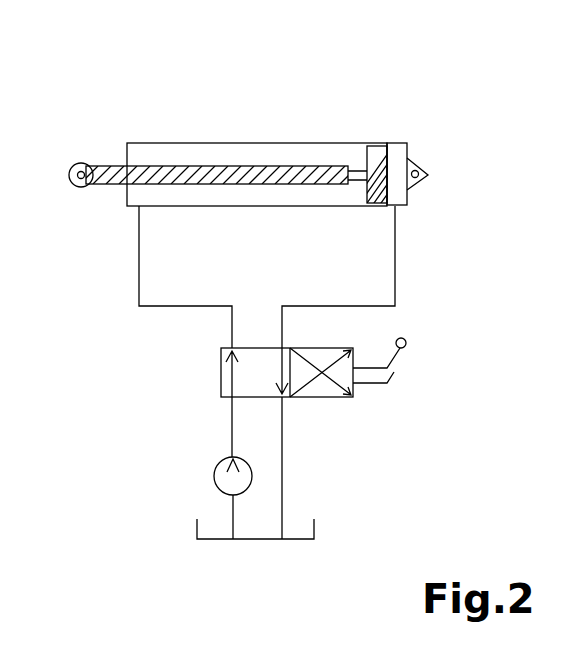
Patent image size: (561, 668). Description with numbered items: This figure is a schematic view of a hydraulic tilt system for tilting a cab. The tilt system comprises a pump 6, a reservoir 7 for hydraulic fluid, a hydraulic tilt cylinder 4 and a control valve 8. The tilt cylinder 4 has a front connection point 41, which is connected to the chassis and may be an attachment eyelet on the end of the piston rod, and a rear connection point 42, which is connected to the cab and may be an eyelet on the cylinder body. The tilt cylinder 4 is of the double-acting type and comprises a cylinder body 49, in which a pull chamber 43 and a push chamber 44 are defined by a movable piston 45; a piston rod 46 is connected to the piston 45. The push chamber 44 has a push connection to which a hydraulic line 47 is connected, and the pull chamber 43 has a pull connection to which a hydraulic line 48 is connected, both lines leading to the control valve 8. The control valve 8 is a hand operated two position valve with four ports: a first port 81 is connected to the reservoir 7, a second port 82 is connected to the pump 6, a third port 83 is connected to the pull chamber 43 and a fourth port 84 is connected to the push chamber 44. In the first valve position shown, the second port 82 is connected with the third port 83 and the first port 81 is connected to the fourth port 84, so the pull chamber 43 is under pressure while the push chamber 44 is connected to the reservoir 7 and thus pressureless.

The hydraulic tilt cylinder 4 is at (149, 113).
The front connection point 41 is at (70, 173).
The rear connection point 42 is at (425, 185).
The pull chamber 43 is at (296, 156).
The push chamber 44 is at (400, 162).
The piston 45 is at (380, 146).
The piston rod 46 is at (193, 176).
The hydraulic line 47 is at (398, 260).
The hydraulic line 48 is at (139, 274).
The cylinder body 49 is at (253, 143).
The control valve 8 is at (328, 400).
The first port 81 is at (283, 398).
The second port 82 is at (232, 397).
The third port 83 is at (232, 343).
The fourth port 84 is at (283, 345).
The pump 6 is at (214, 477).
The reservoir 7 is at (314, 530).